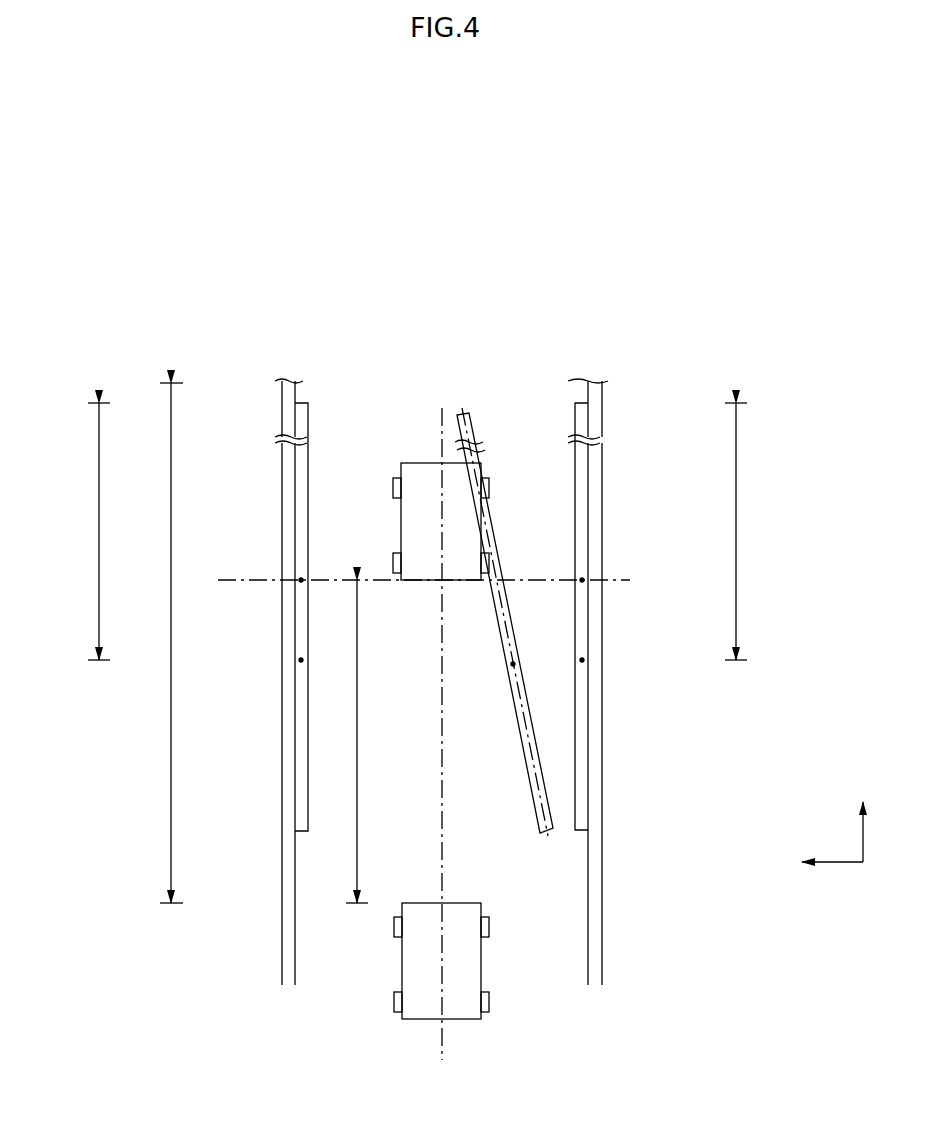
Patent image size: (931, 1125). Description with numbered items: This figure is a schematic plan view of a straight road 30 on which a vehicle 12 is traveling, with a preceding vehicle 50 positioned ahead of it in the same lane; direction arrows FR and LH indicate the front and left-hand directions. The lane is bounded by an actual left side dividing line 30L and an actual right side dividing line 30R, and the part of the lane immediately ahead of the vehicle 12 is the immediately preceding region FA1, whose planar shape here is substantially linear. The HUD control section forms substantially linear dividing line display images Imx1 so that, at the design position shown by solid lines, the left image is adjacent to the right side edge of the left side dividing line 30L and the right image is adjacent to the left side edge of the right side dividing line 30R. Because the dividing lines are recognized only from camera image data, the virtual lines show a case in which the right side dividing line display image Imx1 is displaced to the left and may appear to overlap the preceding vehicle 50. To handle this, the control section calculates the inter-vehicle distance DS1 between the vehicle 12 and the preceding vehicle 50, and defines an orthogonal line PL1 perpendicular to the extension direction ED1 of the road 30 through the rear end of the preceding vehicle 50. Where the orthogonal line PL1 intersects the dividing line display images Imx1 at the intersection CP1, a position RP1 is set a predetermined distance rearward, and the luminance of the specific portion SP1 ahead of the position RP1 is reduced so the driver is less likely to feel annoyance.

The vehicle 12 is at (457, 1013).
The preceding vehicle 50 is at (422, 468).
The road 30 is at (550, 985).
The left side dividing line 30L is at (282, 925).
The right side dividing line 30R is at (601, 923).
The specific portion SP1 is at (97, 532).
The intersection CP1 is at (301, 580).
The orthogonal line PL1 is at (255, 582).
The position RP1 is at (301, 660).
The inter-vehicle distance DS1 is at (357, 745).
The immediately preceding region FA1 is at (171, 822).
The dividing line display images Imx1 is at (297, 815).
The extension direction ED1 is at (443, 798).
The front direction FR is at (862, 817).
The left-hand direction LH is at (814, 862).